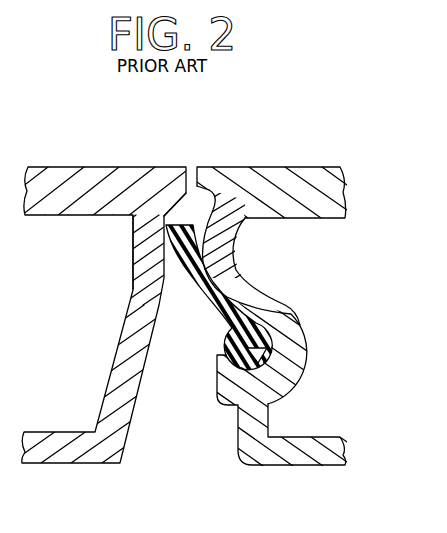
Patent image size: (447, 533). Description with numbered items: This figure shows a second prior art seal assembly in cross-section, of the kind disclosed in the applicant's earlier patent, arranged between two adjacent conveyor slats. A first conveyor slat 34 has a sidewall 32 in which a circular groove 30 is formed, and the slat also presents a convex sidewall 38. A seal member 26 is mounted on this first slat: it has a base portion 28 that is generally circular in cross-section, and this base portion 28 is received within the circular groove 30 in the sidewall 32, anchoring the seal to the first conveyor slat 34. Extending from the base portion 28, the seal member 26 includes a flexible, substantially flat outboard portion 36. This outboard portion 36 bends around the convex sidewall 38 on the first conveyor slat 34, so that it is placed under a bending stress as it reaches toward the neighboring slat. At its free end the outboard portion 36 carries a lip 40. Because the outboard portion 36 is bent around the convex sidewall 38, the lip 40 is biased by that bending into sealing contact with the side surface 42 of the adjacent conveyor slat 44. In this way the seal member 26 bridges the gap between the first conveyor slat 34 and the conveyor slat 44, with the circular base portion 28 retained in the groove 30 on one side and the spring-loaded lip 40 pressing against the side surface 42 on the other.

The conveyor slat 44 is at (80, 190).
The side surface 42 is at (165, 220).
The first conveyor slat 34 is at (300, 192).
The lip 40 is at (133, 240).
The outboard portion 36 is at (188, 273).
The seal member 26 is at (168, 299).
The base portion 28 is at (256, 332).
The circular groove 30 is at (263, 358).
The convex sidewall 38 is at (213, 323).
The sidewall 32 is at (231, 391).